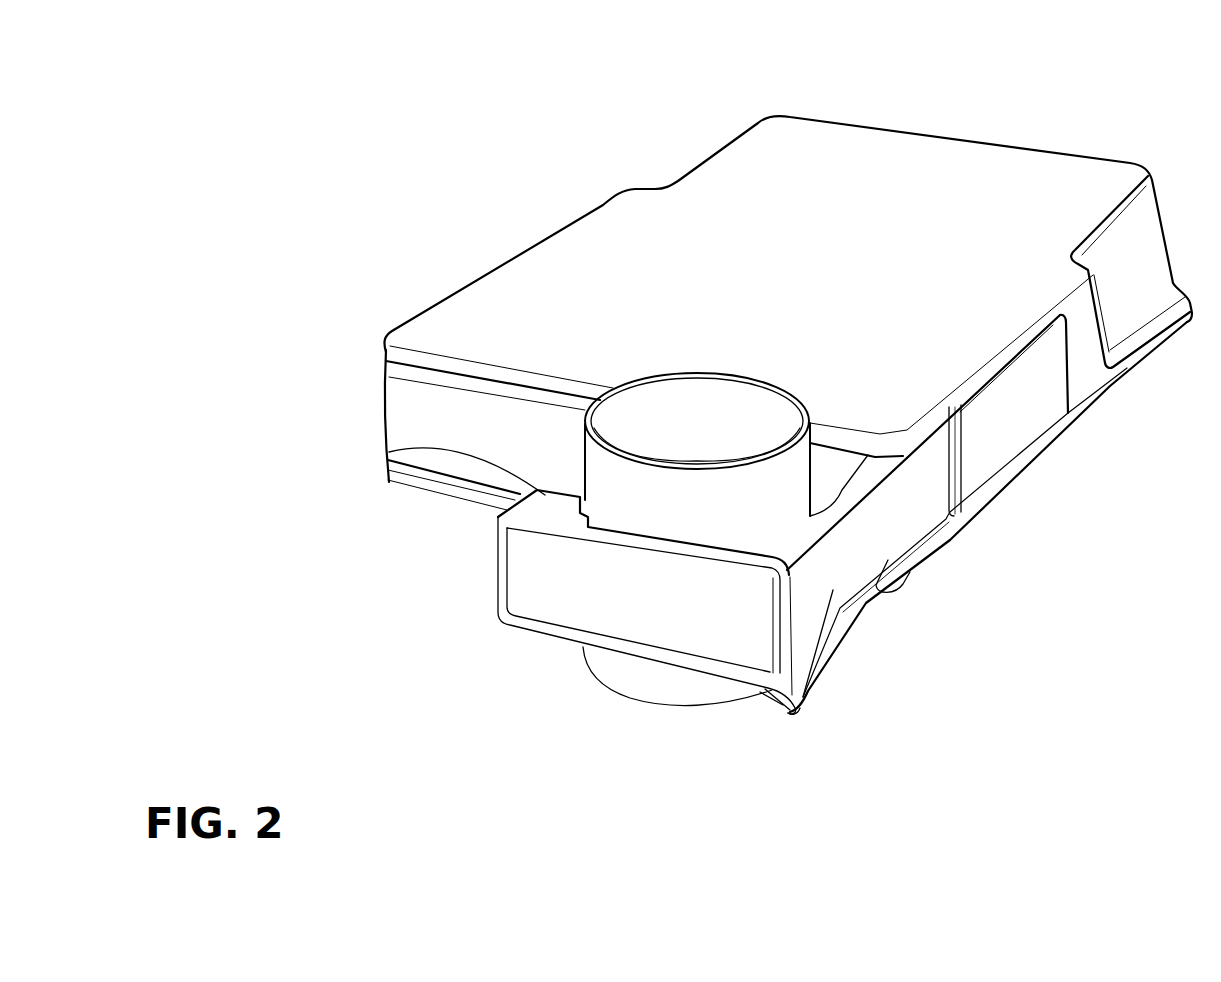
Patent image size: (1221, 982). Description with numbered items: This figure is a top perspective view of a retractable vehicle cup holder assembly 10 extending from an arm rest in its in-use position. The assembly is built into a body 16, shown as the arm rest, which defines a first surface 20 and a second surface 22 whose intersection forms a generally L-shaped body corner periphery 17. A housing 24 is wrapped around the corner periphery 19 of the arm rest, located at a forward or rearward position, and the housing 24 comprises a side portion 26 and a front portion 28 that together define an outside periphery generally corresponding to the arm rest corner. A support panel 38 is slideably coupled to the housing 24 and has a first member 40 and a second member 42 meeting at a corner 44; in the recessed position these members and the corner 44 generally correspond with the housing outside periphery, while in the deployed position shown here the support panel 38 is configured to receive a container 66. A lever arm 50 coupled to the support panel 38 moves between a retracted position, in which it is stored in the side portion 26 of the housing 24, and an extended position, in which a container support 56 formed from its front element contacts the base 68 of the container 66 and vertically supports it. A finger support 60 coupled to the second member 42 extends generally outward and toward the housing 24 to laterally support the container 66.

The vehicle cup holder assembly 10 is at (396, 485).
The body 16 is at (1015, 150).
The body corner periphery 17 is at (907, 437).
The corner periphery 19 is at (922, 397).
The first surface 20 is at (1013, 320).
The second surface 22 is at (823, 424).
The housing 24 is at (973, 463).
The side portion 26 is at (993, 480).
The front portion 28 is at (868, 473).
The support panel 38 is at (402, 408).
The first member 40 is at (888, 558).
The second member 42 is at (512, 627).
The corner 44 is at (780, 660).
The lever arm 50 is at (817, 667).
The container support 56 is at (757, 710).
The finger support 60 is at (392, 453).
The container 66 is at (637, 702).
The base 68 is at (610, 672).